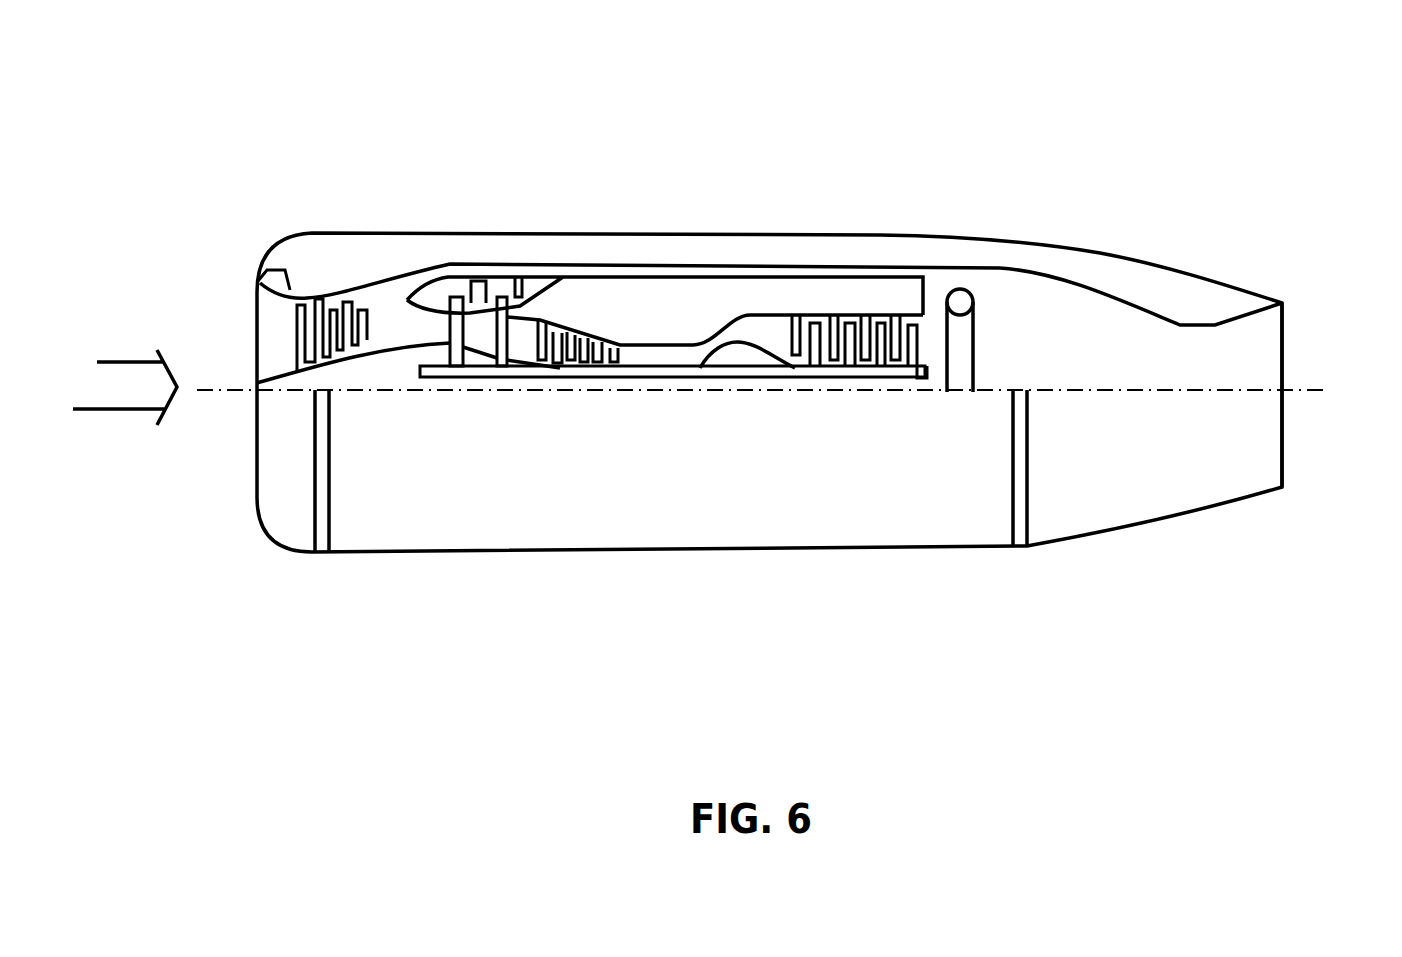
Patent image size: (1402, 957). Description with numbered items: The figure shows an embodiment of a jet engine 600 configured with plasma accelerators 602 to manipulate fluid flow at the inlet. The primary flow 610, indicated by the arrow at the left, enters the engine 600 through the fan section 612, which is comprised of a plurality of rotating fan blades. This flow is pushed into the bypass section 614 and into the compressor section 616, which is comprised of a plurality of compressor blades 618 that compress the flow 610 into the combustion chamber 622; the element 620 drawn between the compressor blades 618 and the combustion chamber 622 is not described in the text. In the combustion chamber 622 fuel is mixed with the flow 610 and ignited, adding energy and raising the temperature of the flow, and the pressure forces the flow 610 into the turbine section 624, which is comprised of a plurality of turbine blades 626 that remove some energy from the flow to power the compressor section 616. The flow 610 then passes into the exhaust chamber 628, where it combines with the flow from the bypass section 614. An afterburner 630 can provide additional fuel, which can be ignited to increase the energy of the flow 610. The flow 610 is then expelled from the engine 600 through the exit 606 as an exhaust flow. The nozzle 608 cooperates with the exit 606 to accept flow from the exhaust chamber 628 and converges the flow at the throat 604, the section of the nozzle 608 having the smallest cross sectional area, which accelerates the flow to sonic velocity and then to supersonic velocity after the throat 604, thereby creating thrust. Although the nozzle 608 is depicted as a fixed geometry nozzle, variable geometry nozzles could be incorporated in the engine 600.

The engine 600 is at (1142, 147).
The plasma accelerators 602 is at (265, 260).
The throat 604 is at (1190, 320).
The exit 606 is at (1290, 353).
The nozzle 608 is at (761, 409).
The primary flow 610 is at (127, 348).
The fan section 612 is at (306, 300).
The bypass section 614 is at (438, 327).
The compressor section 616 is at (430, 278).
The compressor blades 618 is at (550, 322).
The combustor 620 is at (593, 330).
The combustion chamber 622 is at (702, 343).
The turbine section 624 is at (778, 364).
The turbine blades 626 is at (914, 364).
The exhaust chamber 628 is at (937, 313).
The afterburner 630 is at (964, 287).